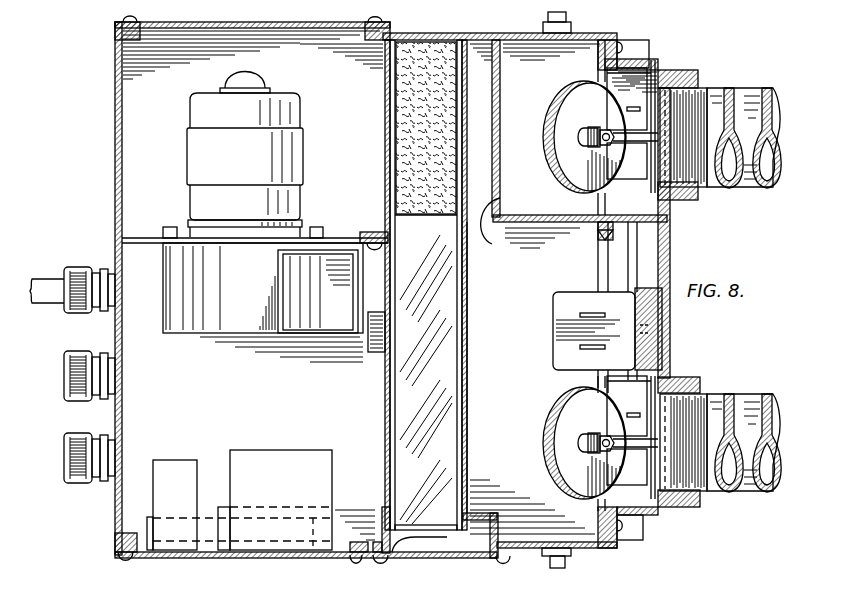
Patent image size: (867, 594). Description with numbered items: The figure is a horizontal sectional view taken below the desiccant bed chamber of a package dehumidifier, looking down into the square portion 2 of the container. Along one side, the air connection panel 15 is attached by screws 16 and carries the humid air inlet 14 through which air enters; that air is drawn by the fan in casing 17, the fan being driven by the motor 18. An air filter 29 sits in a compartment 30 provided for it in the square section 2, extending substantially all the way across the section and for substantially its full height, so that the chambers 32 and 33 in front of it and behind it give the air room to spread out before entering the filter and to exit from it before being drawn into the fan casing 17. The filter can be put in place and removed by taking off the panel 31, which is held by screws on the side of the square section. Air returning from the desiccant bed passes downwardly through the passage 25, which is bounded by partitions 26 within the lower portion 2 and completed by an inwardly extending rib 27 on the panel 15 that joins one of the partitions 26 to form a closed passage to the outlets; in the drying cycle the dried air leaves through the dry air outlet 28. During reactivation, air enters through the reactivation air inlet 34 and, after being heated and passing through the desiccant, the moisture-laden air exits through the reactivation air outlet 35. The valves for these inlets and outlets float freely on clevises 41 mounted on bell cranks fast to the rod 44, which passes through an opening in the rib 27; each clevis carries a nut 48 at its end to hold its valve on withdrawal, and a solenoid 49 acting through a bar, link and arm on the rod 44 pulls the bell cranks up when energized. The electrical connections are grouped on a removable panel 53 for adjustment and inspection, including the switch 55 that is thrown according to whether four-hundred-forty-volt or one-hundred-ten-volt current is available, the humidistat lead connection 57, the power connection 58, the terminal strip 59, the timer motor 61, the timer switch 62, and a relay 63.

The square portion 2 is at (115, 183).
The humid air inlet 14 is at (744, 465).
The air connection panel 15 is at (672, 258).
The screws 16 is at (314, 307).
The casing 17 is at (243, 325).
The motor 18 is at (303, 165).
The passage 25 is at (556, 190).
The partitions 26 is at (497, 238).
The rib 27 is at (655, 237).
The dry air outlet 28 is at (716, 90).
The air filter 29 is at (451, 330).
The compartment 30 is at (407, 550).
The panel 31 is at (438, 548).
The chamber 32 is at (540, 383).
The chamber 33 is at (362, 403).
The reactivation air inlet 34 is at (721, 422).
The reactivation air outlet 35 is at (766, 200).
The clevises 41 is at (600, 443).
The rod 44 is at (628, 256).
The nut 48 is at (600, 130).
The solenoid 49 is at (556, 298).
The panel 53 is at (305, 558).
The switch 55 is at (222, 507).
The lead connection 57 is at (64, 472).
The power connection 58 is at (64, 378).
The terminal strip 59 is at (147, 528).
The timer motor 61 is at (277, 489).
The timer switch 62 is at (320, 489).
The relay 63 is at (190, 491).